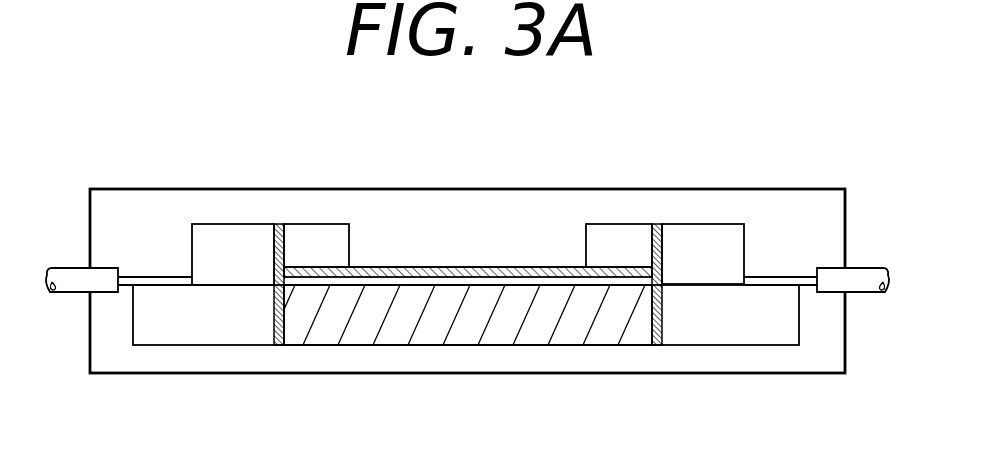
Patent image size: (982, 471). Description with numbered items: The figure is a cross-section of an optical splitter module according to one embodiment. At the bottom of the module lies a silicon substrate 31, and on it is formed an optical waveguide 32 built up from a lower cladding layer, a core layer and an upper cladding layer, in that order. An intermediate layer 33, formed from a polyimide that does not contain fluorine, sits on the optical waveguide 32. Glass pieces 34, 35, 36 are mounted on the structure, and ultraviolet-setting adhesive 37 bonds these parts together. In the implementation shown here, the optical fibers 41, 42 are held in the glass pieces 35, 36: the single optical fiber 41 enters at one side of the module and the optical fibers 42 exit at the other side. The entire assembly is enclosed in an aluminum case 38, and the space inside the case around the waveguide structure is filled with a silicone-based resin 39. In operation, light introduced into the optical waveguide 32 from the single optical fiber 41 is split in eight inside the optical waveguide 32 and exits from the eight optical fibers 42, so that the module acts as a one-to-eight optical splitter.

The silicon substrate 31 is at (335, 328).
The optical waveguide 32 is at (432, 277).
The intermediate layer 33 is at (477, 268).
The glass pieces 34 is at (331, 247).
The glass piece 35 is at (222, 245).
The glass piece 36 is at (711, 245).
The ultraviolet-setting adhesive 37 is at (278, 224).
The aluminum case 38 is at (823, 189).
The silicone-based resin 39 is at (531, 222).
The optical fiber 41 is at (148, 277).
The optical fibers 42 is at (780, 277).